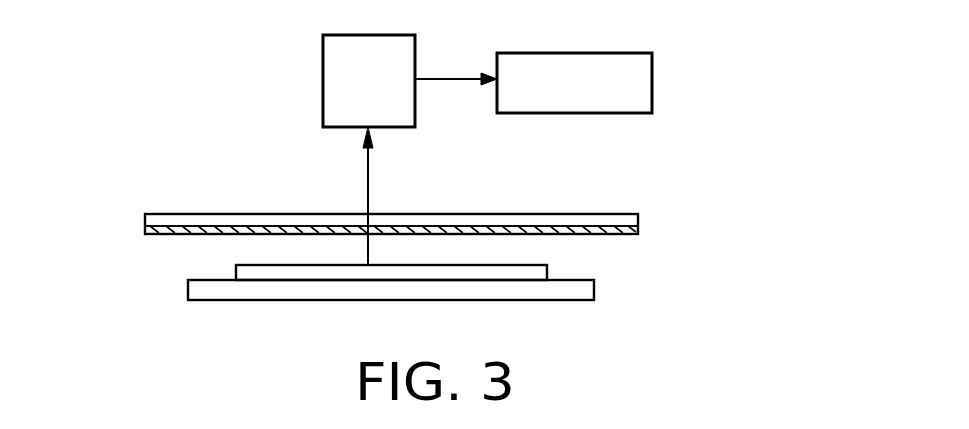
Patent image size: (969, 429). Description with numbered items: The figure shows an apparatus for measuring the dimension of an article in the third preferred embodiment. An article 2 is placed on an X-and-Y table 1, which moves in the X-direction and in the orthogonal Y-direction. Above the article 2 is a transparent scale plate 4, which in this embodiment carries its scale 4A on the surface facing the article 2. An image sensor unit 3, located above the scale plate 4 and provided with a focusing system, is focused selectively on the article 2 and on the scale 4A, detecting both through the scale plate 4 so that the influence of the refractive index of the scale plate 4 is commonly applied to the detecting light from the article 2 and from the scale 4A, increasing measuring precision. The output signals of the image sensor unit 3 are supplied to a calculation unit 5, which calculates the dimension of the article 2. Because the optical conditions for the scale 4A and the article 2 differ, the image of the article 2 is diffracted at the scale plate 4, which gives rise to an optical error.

The X-and-Y table 1 is at (578, 290).
The article 2 is at (549, 275).
The image sensor unit 3 is at (323, 100).
The scale plate 4 is at (603, 213).
The scale 4A is at (153, 236).
The calculation unit 5 is at (537, 113).